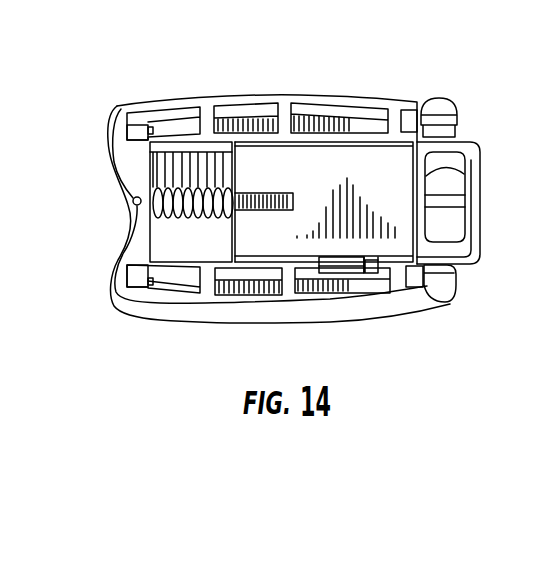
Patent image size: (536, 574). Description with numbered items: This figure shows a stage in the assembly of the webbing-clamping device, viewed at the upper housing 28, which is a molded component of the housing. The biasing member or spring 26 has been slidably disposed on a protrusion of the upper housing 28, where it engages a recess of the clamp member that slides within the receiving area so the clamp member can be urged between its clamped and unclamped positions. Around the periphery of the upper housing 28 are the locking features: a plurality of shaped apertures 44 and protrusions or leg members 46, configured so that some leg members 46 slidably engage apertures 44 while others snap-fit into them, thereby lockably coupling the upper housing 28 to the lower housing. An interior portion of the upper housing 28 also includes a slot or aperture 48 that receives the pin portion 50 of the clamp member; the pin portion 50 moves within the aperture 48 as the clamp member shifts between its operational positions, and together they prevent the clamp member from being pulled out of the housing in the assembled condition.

The biasing member or spring 26 is at (178, 216).
The upper housing portion 28 is at (283, 97).
The shaped apertures 44 is at (137, 124).
The leg members 46 is at (435, 103).
The slot or aperture 48 is at (348, 272).
The pin portion 50 is at (370, 270).